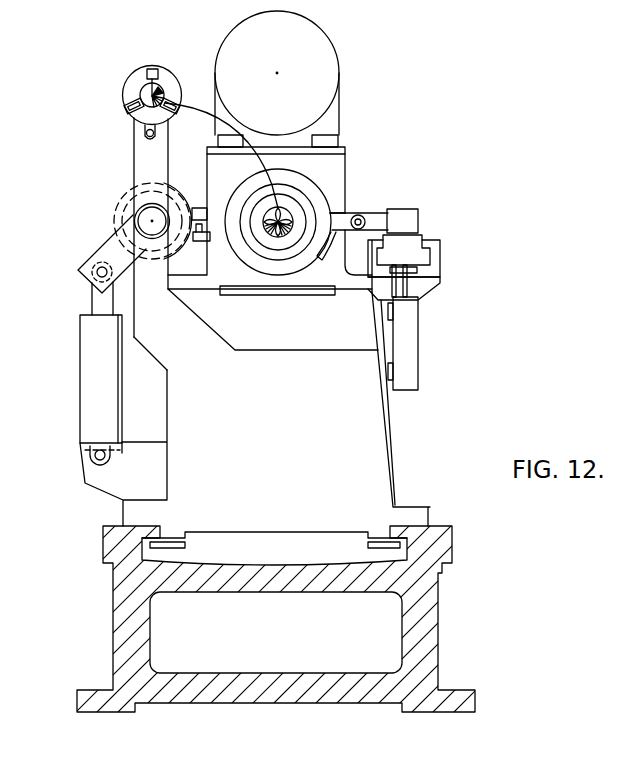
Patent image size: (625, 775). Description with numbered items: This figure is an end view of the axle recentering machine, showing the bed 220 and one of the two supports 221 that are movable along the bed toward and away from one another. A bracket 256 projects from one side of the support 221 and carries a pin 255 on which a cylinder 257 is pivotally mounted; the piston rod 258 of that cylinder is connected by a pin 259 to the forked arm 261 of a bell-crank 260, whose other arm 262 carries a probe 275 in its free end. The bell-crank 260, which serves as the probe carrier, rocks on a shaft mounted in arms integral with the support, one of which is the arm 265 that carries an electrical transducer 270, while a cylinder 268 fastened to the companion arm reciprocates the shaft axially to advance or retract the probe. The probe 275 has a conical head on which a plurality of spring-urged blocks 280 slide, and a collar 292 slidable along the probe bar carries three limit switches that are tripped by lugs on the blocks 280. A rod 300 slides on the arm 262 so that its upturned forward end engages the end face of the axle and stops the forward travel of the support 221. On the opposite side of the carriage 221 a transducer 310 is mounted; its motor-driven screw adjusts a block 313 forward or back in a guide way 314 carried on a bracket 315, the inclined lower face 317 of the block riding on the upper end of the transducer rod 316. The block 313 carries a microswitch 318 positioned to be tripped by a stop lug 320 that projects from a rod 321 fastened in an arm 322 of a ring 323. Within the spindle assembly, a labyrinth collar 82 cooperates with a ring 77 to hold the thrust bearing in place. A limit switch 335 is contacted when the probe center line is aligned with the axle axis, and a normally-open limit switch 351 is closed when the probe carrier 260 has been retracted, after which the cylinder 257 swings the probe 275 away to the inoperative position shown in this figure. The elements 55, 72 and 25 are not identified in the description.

The motor 55 is at (331, 78).
The probe 275 is at (157, 93).
The collar 292 is at (123, 91).
The blocks 280 is at (125, 102).
The bell-crank 260 is at (118, 138).
The rod 300 is at (143, 135).
The arm 262 is at (165, 165).
The cylinder 268 is at (127, 199).
The electrical transducer 270 is at (134, 220).
The forked arm 261 is at (104, 248).
The pin 259 is at (96, 272).
The piston rod 258 is at (99, 299).
The cylinder 257 is at (80, 379).
The arm 265 is at (146, 349).
The pin 255 is at (93, 459).
The bracket 256 is at (113, 487).
The limit switch 351 is at (192, 207).
The limit switch 335 is at (203, 247).
The labyrinth collar 82 is at (258, 206).
The ring 77 is at (266, 258).
The spindle 72 is at (266, 232).
The ring 323 is at (313, 183).
The housing 25 is at (337, 181).
The arm 322 is at (328, 236).
The stop lug 320 is at (378, 212).
The rod 321 is at (358, 215).
The microswitch 318 is at (413, 211).
The block 313 is at (417, 243).
The guide way 314 is at (437, 268).
The bracket 315 is at (437, 295).
The inclined lower face 317 is at (396, 272).
The rod 316 is at (402, 284).
The transducer 310 is at (413, 363).
The support 221 is at (385, 464).
The bed 220 is at (297, 697).